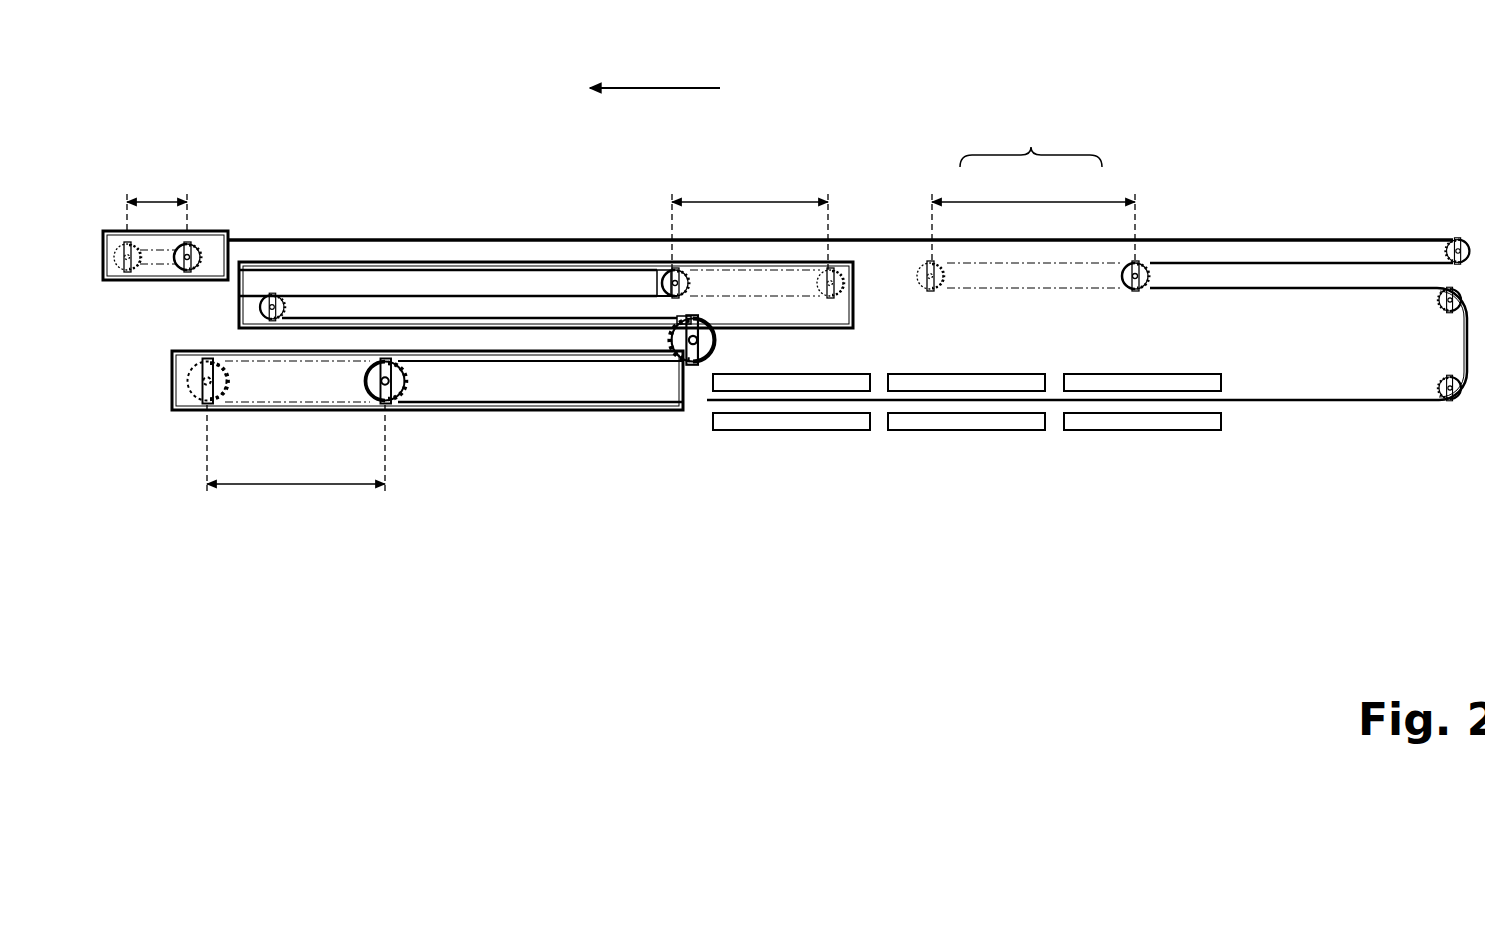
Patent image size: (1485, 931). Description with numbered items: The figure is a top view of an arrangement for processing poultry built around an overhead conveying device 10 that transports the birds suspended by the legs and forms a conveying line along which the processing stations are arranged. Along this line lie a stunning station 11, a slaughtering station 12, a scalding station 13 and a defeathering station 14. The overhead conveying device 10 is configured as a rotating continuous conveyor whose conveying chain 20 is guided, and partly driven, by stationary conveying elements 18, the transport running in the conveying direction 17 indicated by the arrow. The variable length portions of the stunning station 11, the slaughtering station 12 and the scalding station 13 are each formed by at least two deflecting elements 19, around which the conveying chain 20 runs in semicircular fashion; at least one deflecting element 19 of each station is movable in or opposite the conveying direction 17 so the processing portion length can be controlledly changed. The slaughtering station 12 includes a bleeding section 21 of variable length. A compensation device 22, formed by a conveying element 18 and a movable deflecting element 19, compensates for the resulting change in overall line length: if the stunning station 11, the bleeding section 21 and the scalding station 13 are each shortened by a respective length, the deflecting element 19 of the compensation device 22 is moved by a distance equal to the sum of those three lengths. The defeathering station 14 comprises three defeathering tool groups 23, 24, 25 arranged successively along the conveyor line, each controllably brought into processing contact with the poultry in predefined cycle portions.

The overhead conveying device 10 is at (601, 226).
The stunning station 11 is at (138, 282).
The slaughtering station 12 is at (500, 261).
The scalding station 13 is at (525, 412).
The defeathering station 14 is at (850, 588).
The conveying direction 17 is at (660, 87).
The conveying element 18 is at (272, 297).
The deflecting element 19 is at (126, 254).
The conveying chain 20 is at (1400, 237).
The bleeding section 21 is at (592, 299).
The compensation device 22 is at (1032, 138).
The defeathering tool group 23 is at (792, 456).
The defeathering tool group 24 is at (966, 456).
The defeathering tool group 25 is at (1141, 456).